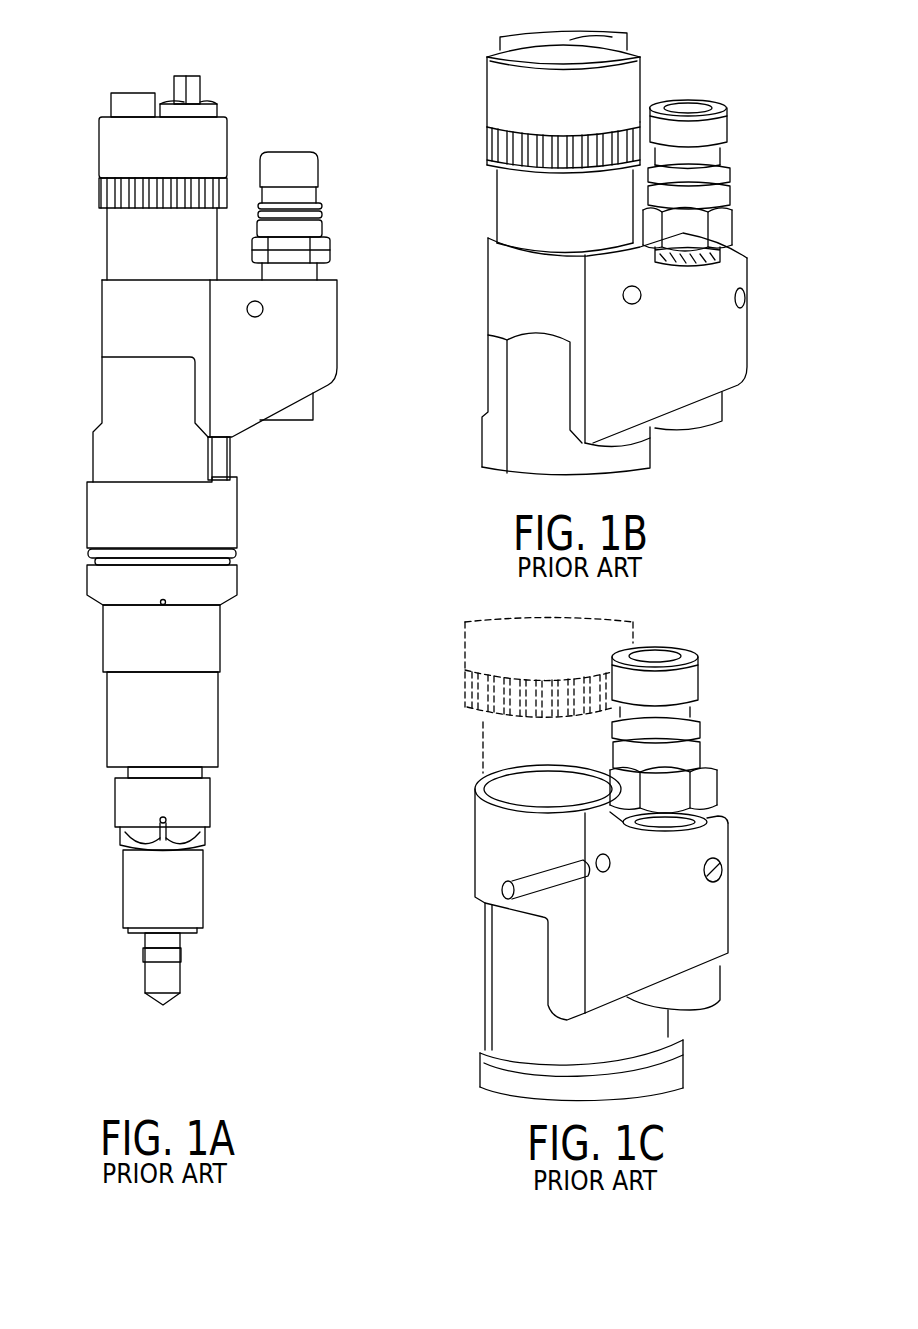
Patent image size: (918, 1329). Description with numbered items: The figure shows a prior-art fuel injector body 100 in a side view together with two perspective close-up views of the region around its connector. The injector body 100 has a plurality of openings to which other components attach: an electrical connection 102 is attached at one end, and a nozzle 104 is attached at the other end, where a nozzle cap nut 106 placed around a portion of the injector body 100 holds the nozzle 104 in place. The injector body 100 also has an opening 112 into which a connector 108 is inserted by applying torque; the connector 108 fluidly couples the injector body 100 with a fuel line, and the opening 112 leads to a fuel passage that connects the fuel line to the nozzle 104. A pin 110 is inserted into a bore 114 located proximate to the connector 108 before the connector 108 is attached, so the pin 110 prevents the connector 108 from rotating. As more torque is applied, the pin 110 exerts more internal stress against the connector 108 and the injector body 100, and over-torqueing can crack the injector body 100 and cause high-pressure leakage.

In FIG. 1A, the fuel injector body 100 is at (116, 333).
In FIG. 1B, the fuel injector body 100 is at (498, 273).
In FIG. 1C, the fuel injector body 100 is at (507, 978).
In FIG. 1A, the electrical connection 102 is at (194, 84).
In FIG. 1A, the nozzle 104 is at (163, 1005).
In FIG. 1A, the nozzle cap nut 106 is at (203, 872).
In FIG. 1A, the connector 108 is at (309, 167).
In FIG. 1B, the connector 108 is at (720, 125).
In FIG. 1C, the connector 108 is at (687, 682).
In FIG. 1A, the pin 110 is at (255, 317).
In FIG. 1B, the pin 110 is at (632, 302).
In FIG. 1C, the pin 110 is at (567, 870).
In FIG. 1B, the opening 112 is at (737, 247).
In FIG. 1C, the bore 114 is at (609, 870).